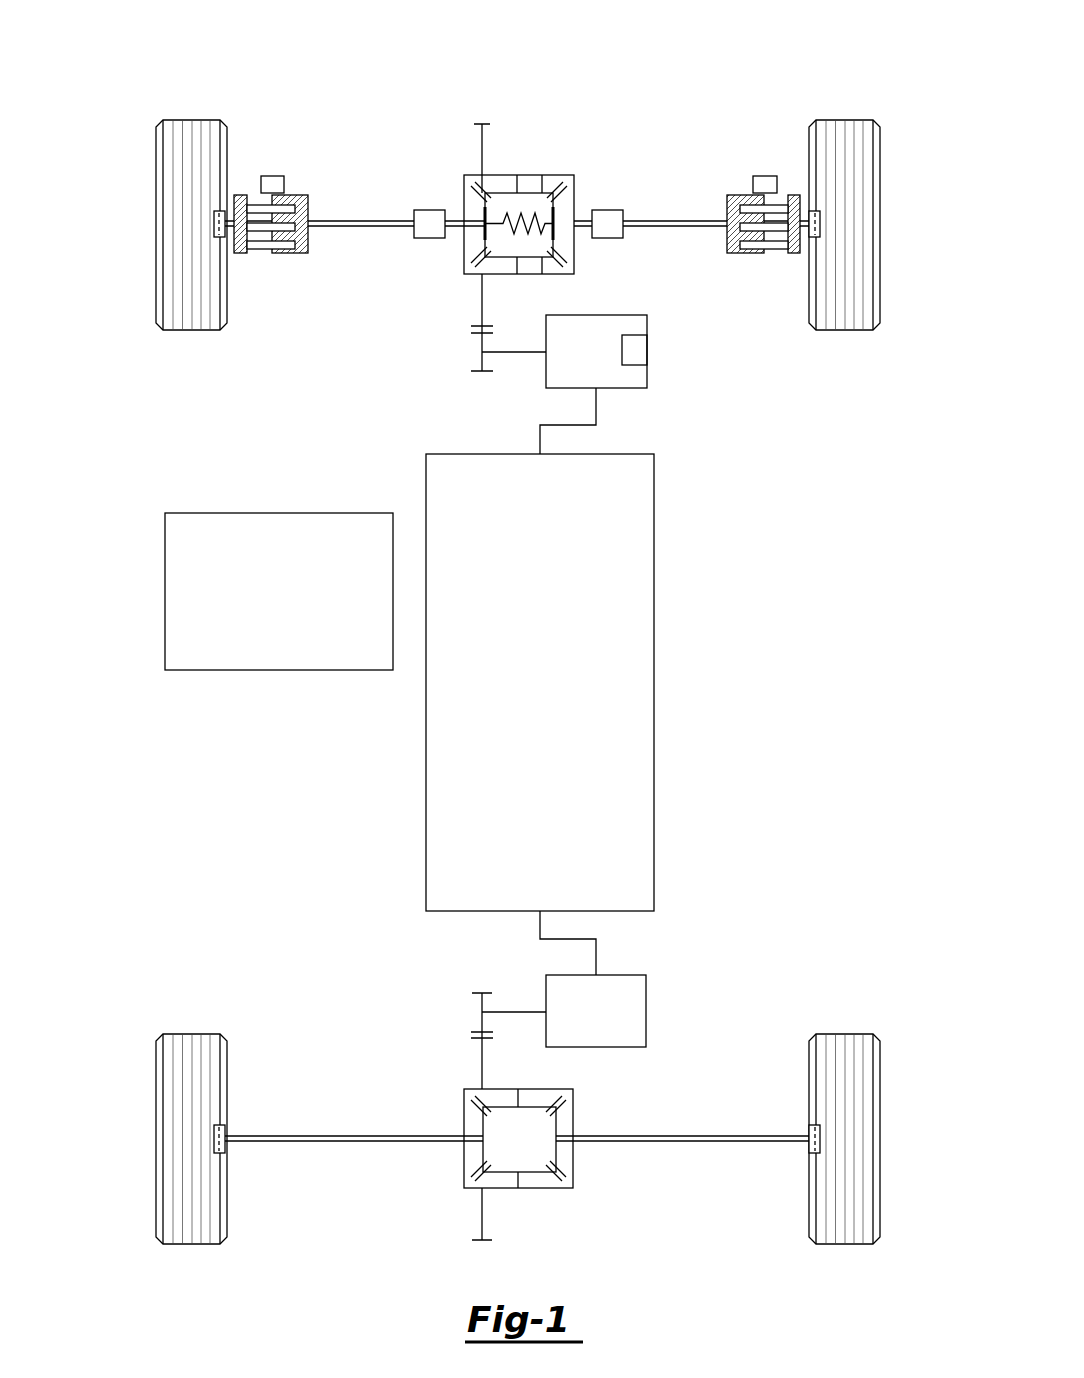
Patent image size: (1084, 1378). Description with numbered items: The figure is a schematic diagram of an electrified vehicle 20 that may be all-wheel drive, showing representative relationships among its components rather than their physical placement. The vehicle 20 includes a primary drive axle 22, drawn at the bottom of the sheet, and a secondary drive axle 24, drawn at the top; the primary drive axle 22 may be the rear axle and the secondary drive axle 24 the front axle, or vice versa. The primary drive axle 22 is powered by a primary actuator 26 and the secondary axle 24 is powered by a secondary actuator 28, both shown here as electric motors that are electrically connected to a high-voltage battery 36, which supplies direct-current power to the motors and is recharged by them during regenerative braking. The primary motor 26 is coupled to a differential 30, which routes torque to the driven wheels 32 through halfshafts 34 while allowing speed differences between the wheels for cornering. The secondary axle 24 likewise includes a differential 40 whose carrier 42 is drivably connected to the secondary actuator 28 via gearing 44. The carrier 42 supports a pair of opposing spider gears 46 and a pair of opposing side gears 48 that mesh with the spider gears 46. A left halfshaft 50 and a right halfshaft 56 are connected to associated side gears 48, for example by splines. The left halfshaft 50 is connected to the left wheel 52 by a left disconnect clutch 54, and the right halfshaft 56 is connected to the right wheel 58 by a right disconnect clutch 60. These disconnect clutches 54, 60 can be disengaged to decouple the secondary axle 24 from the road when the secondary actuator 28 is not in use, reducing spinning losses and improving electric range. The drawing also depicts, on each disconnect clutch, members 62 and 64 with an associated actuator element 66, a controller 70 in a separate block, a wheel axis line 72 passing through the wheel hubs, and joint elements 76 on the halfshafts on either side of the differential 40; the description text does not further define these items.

The electrified vehicle 20 is at (739, 44).
The primary drive axle 22 is at (790, 1015).
The secondary drive axle 24 is at (690, 143).
The primary actuator 26 is at (647, 1013).
The secondary actuator 28 is at (648, 350).
The differential 30 is at (575, 1211).
The driven wheels 32 is at (191, 1244).
The halfshafts 34 is at (366, 1134).
The high-voltage battery 36 is at (655, 681).
The differential 40 is at (545, 165).
The carrier 42 is at (575, 252).
The gearing 44 is at (479, 142).
The spider gears 46 is at (537, 189).
The side gears 48 is at (474, 243).
The left halfshaft 50 is at (380, 220).
The left wheel 52 is at (190, 119).
The left disconnect clutch 54 is at (299, 186).
The right halfshaft 56 is at (663, 220).
The right wheel 58 is at (845, 119).
The right disconnect clutch 60 is at (758, 150).
The clutch output member 62 is at (295, 254).
The clutch input member 64 is at (262, 254).
The clutch actuator 66 is at (272, 175).
The controller 70 is at (165, 592).
The wheel hub / axis 72 is at (214, 224).
The torque sensor / joint 76 is at (430, 209).